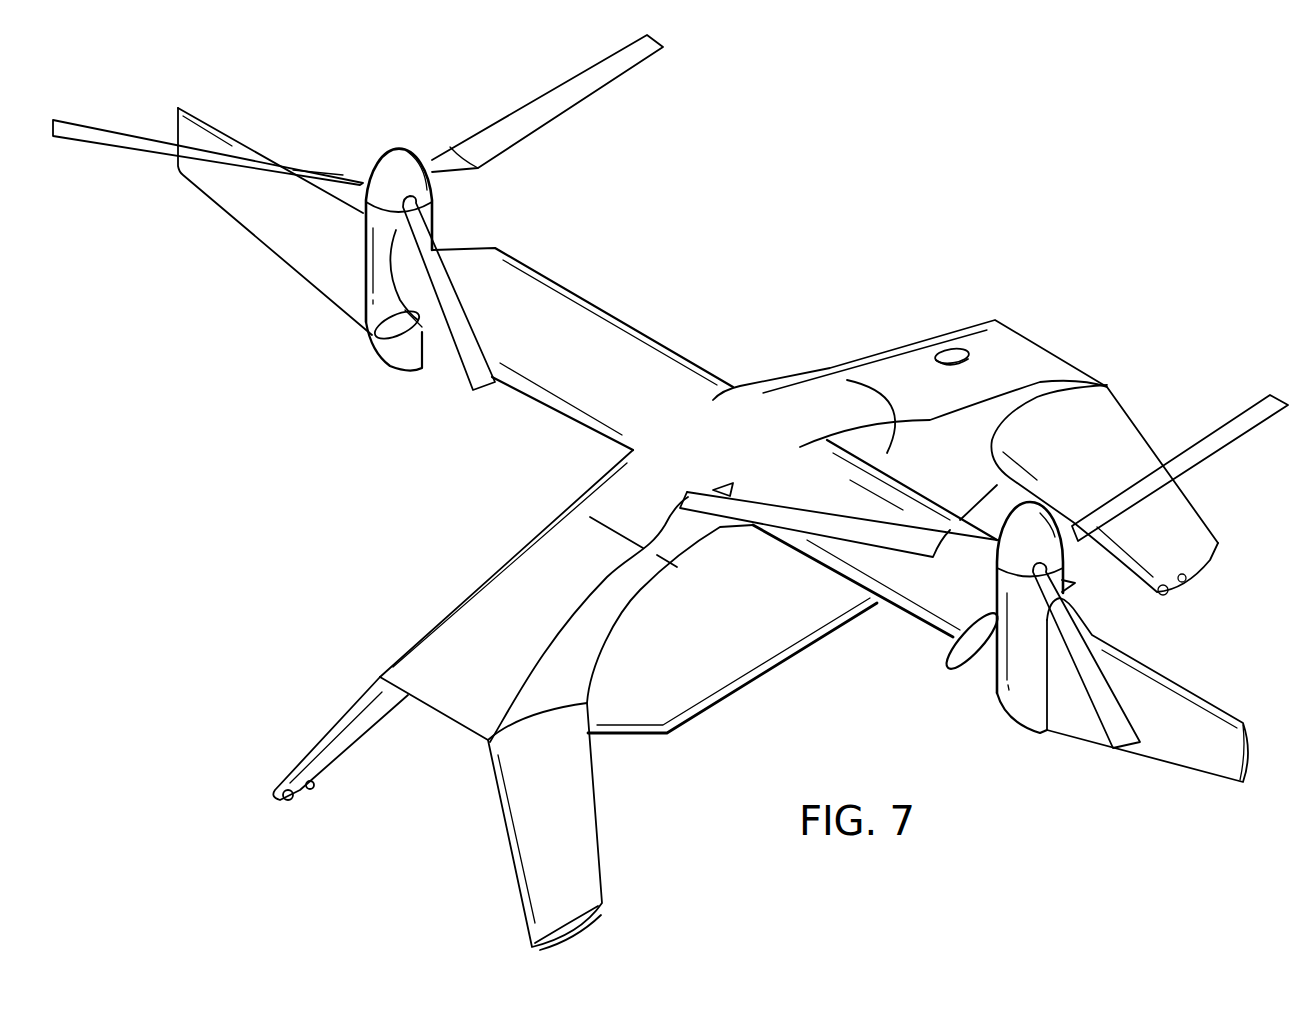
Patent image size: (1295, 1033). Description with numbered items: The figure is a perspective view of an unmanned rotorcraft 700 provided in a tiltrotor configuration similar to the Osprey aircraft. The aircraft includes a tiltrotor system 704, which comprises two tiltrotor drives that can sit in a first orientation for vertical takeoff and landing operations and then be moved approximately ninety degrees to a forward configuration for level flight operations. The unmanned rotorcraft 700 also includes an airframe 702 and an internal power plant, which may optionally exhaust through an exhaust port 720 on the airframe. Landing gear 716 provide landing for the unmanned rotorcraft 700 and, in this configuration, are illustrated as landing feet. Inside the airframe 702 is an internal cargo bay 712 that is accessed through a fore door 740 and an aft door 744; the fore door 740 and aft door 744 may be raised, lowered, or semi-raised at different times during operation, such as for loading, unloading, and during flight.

The unmanned rotorcraft 700 is at (1193, 206).
The airframe 702 is at (755, 400).
The tiltrotor system 704 is at (1162, 790).
The cargo bay 712 is at (770, 655).
The landing gear 716 is at (560, 930).
The exhaust port 720 is at (947, 349).
The fore door 740 is at (620, 733).
The aft door 744 is at (1043, 500).